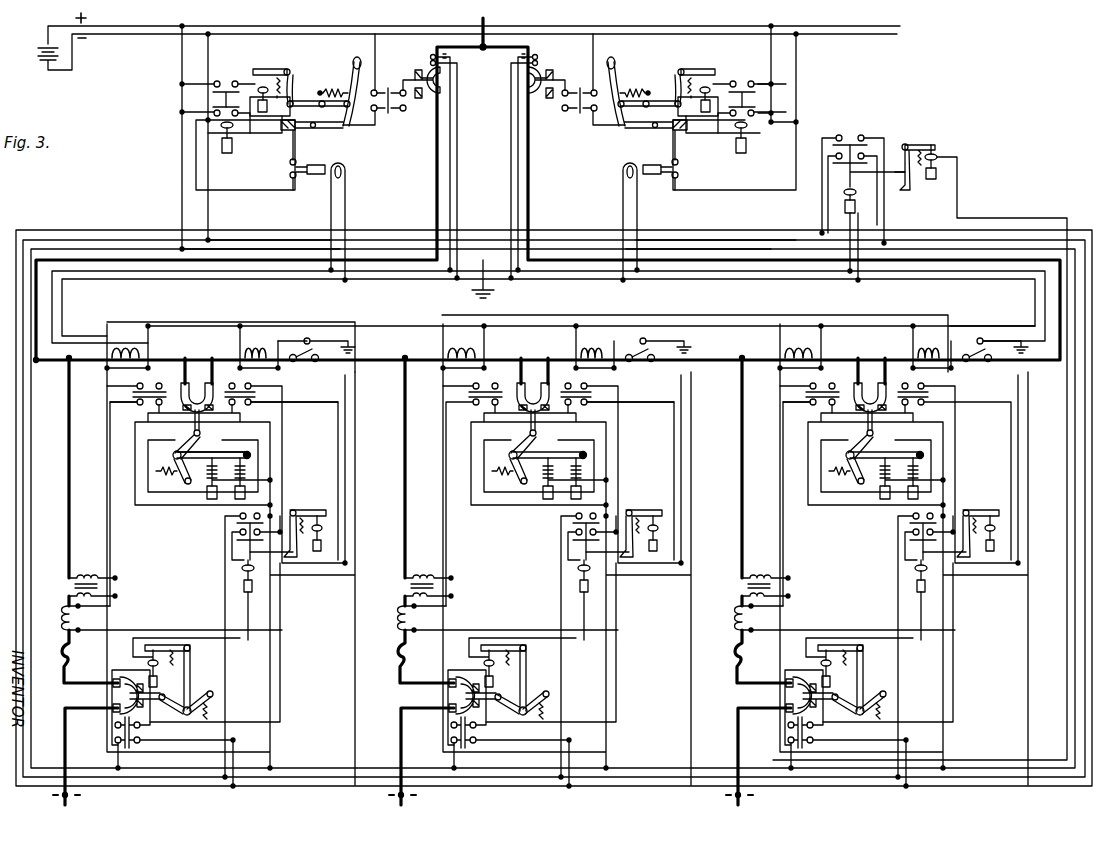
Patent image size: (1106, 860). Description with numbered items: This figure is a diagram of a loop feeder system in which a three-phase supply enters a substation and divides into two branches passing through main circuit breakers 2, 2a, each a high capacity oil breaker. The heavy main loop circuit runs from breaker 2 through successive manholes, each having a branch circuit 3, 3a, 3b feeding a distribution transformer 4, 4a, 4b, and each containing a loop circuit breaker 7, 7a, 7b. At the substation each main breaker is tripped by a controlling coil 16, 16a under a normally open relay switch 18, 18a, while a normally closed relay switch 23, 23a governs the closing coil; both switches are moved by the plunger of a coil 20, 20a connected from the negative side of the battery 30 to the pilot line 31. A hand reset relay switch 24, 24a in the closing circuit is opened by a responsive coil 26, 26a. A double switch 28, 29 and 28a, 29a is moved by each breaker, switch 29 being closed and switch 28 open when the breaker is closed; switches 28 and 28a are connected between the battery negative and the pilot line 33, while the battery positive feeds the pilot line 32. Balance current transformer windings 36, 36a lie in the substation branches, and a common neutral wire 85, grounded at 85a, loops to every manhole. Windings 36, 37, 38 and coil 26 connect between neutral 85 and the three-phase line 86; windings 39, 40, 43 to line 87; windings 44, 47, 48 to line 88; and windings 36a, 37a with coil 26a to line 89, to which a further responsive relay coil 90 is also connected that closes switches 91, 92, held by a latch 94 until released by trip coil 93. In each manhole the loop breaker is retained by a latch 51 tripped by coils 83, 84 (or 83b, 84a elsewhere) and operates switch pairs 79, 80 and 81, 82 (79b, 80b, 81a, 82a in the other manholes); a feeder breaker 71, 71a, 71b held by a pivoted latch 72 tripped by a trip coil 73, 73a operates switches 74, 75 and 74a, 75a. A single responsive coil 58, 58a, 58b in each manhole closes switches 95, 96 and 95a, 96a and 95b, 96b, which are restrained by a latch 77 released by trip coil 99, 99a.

The main circuit breaker 2 is at (445, 80).
The main circuit breaker 2a is at (522, 80).
The branch circuit 3 is at (67, 422).
The branch circuit 3a is at (402, 460).
The conductor 3b is at (740, 458).
The distribution transformer 4 is at (64, 586).
The transformer 4a is at (400, 586).
The transformer 4b is at (738, 590).
The circuit breaker 7 is at (200, 388).
The circuit breaker 7a is at (534, 388).
The circuit breaker 7b is at (872, 388).
The controlling coil 16 is at (287, 70).
The lever switch 16a is at (690, 72).
The relay switch 18 is at (228, 88).
The contacts 18a is at (742, 88).
The coil 20 is at (238, 140).
The magnet coil 20a is at (736, 140).
The relay switch 23 is at (215, 108).
The contacts 23a is at (755, 108).
The relay switch 24 is at (296, 162).
The contact 24a is at (678, 173).
The coil 26 is at (345, 168).
The responsive coil 26a is at (630, 168).
The switch 28 is at (388, 114).
The switch 28a is at (580, 114).
The switch 29 is at (404, 110).
The contacts 29a is at (564, 112).
The battery 30 is at (40, 54).
The pilot line 31 is at (118, 240).
The pilot line 32 is at (69, 240).
The pilot line 33 is at (152, 249).
The current transformer windings 36 is at (440, 60).
The current transformer windings 36a is at (530, 60).
The balanced current transformer 37 is at (250, 352).
The current transformer windings 37a is at (802, 340).
The current transformer 38 is at (58, 616).
The balance current transformer 39 is at (110, 345).
The current transformer 40 is at (600, 345).
The current transformer 43 is at (394, 620).
The current transformer 44 is at (470, 346).
The current transformer 47 is at (938, 345).
The current transformer 48 is at (732, 626).
The latch 51 is at (188, 460).
The relay coil 58 is at (242, 570).
The responsive coil 58a is at (578, 570).
The responsive coil 58b is at (915, 570).
The circuit breaker 71 is at (118, 692).
The electromagnet 71a is at (454, 692).
The electromagnet 71b is at (791, 692).
The pivoted latch 72 is at (188, 672).
The trip coil 73 is at (160, 664).
The coil 73a is at (496, 664).
The switch 74 is at (113, 730).
The contacts 74a is at (449, 733).
The switch 75 is at (140, 740).
The contacts 75a is at (476, 740).
The latch 77 is at (316, 502).
The switch 79 is at (143, 386).
The contacts 79b is at (818, 386).
The switch 80 is at (136, 400).
The contacts 80b is at (808, 400).
The switch 81 is at (234, 386).
The contacts 81a is at (572, 386).
The switch 82 is at (252, 400).
The contacts 82a is at (590, 402).
The tripping coil 83 is at (206, 486).
The coil 83b is at (880, 488).
The tripping coil 84 is at (245, 478).
The coil 84a is at (582, 478).
The neutral wire 85 is at (170, 278).
The ground 85a is at (490, 290).
The three-phase line 86 is at (195, 280).
The three-phase line 87 is at (264, 322).
The three-phase line 88 is at (655, 315).
The three-phase line 89 is at (790, 283).
The responsive relay coil 90 is at (844, 192).
The switch 91 is at (850, 140).
The switch 92 is at (834, 163).
The trip coil 93 is at (934, 155).
The latch 94 is at (900, 150).
The switch 95 is at (240, 520).
The switch 95a is at (576, 520).
The switch 95b is at (918, 518).
The switch 96 is at (240, 540).
The switch 96a is at (576, 540).
The switch 96b is at (913, 540).
The trip coil 99 is at (322, 528).
The coil 99a is at (658, 526).